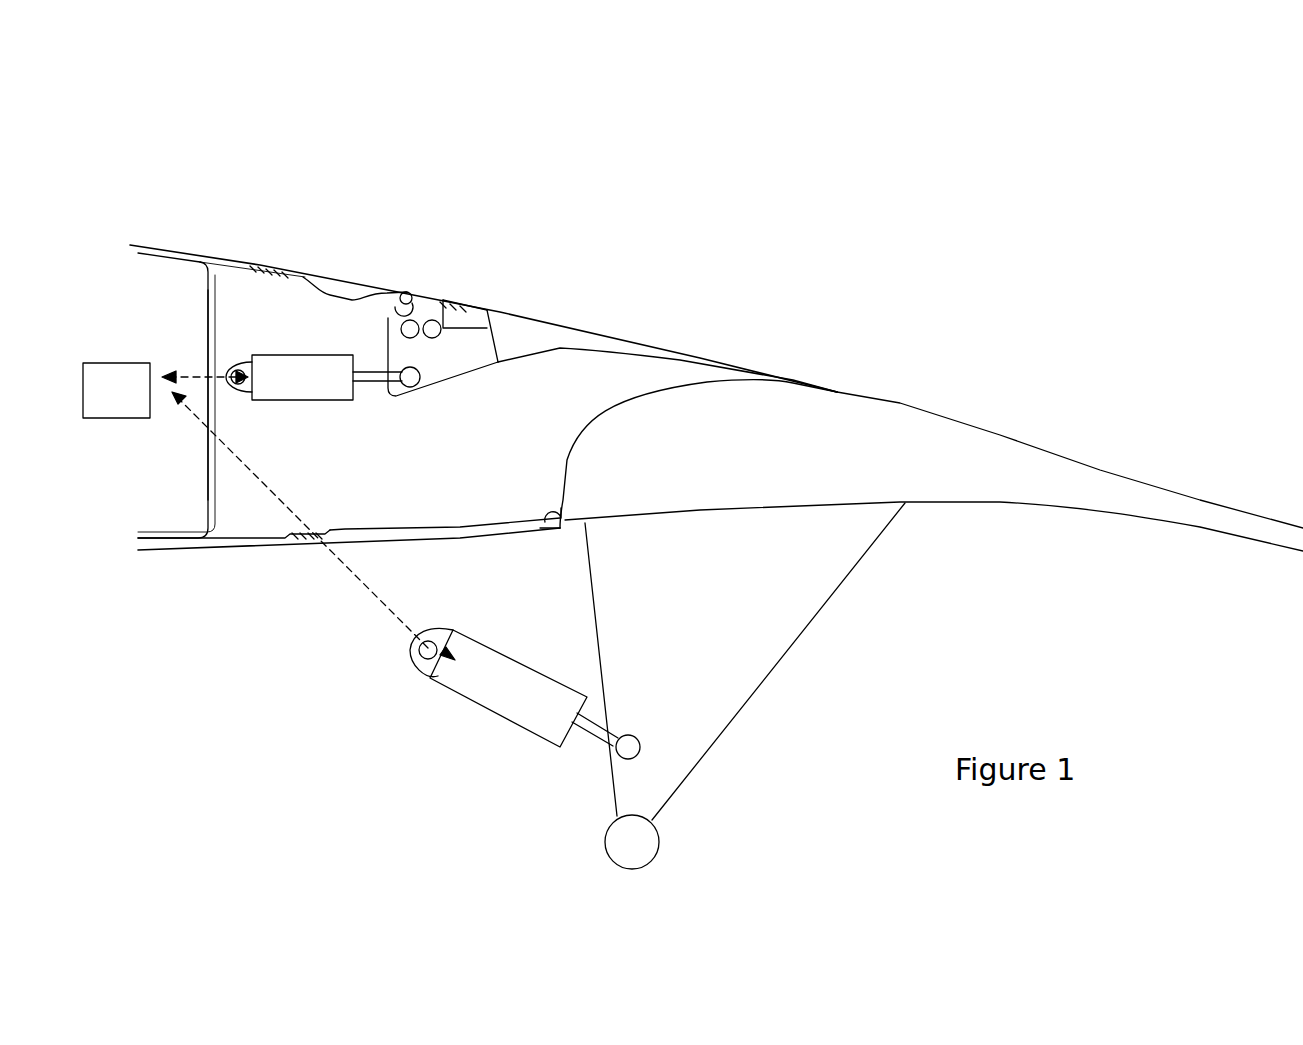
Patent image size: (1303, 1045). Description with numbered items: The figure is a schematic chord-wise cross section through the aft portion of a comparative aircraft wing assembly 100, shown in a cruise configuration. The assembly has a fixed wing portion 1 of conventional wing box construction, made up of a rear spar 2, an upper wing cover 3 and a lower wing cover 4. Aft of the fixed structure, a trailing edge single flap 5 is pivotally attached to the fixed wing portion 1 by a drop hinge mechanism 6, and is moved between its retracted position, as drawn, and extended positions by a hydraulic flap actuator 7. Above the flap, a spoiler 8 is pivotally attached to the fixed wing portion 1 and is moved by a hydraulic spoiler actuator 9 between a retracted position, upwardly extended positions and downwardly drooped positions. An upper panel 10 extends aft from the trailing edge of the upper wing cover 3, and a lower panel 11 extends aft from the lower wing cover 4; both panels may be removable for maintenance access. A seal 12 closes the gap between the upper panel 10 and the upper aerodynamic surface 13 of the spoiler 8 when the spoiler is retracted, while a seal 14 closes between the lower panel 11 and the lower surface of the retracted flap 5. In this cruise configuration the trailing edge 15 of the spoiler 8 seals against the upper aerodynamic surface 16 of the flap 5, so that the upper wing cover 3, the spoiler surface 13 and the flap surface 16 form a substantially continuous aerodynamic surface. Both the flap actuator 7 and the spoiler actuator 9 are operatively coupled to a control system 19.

The aircraft wing assembly 100 is at (978, 189).
The fixed wing portion 1 is at (225, 150).
The rear spar 2 is at (207, 487).
The upper wing cover 3 is at (230, 261).
The lower wing cover 4 is at (235, 550).
The trailing edge single flap 5 is at (900, 431).
The drop hinge mechanism 6 is at (683, 742).
The hydraulic flap actuator 7 is at (500, 692).
The spoiler 8 is at (537, 331).
The hydraulic spoiler actuator 9 is at (293, 365).
The upper panel 10 is at (357, 283).
The lower panel 11 is at (426, 527).
The seal 12 is at (414, 292).
The upper aerodynamic surface 13 is at (645, 341).
The seal 14 is at (542, 524).
The trailing edge 15 is at (797, 383).
The upper aerodynamic surface 16 is at (1072, 455).
The control system 19 is at (269, 511).